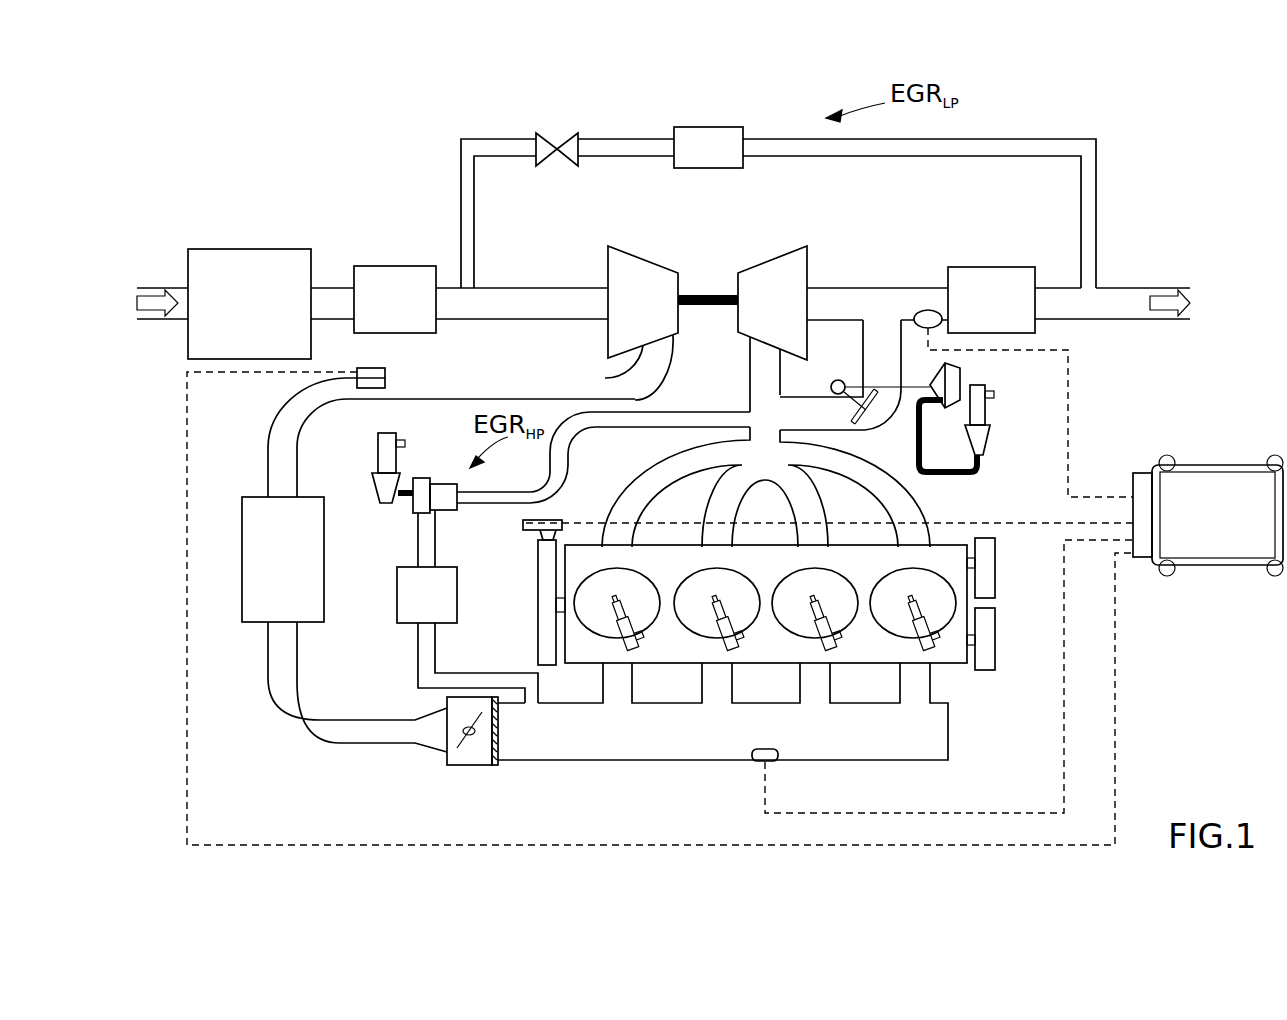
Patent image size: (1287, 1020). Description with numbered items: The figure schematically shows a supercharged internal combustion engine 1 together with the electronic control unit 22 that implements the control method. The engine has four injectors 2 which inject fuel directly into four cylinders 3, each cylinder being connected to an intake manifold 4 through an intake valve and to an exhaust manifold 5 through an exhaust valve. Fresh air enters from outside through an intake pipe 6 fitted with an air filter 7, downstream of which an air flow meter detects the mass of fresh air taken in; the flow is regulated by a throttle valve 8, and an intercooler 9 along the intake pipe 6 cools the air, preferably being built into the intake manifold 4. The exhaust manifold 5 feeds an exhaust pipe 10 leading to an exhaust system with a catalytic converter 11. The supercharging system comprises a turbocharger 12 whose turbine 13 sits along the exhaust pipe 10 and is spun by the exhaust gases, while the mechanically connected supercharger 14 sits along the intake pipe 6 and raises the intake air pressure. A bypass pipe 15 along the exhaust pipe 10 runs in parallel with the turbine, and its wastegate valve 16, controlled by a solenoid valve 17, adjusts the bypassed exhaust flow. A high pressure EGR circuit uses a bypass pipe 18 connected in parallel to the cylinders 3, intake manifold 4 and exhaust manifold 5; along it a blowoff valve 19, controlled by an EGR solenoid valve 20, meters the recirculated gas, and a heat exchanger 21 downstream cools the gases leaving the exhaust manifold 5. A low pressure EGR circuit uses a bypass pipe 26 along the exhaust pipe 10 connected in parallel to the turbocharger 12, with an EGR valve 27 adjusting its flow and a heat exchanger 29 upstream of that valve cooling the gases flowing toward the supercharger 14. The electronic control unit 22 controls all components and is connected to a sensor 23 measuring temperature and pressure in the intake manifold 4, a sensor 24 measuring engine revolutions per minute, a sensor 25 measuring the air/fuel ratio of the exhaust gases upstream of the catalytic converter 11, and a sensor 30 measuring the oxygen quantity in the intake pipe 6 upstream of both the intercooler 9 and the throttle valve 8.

The internal combustion engine 1 is at (305, 197).
The injectors 2 is at (932, 660).
The cylinders 3 is at (765, 603).
The intake manifold 4 is at (746, 649).
The exhaust manifold 5 is at (766, 442).
The intake pipe 6 is at (268, 448).
The air filter 7 is at (249, 304).
The throttle valve 8 is at (465, 765).
The intercooler 9 is at (283, 559).
The exhaust pipe 10 is at (905, 286).
The catalytic converter 11 is at (991, 300).
The turbocharger 12 is at (719, 264).
The turbine 13 is at (770, 265).
The supercharger 14 is at (635, 250).
The bypass pipe 15 is at (868, 363).
The wastegate valve 16 is at (868, 400).
The solenoid valve 17 is at (987, 428).
The bypass pipe 18 is at (434, 652).
The blowoff valve 19 is at (440, 511).
The EGR solenoid valve 20 is at (378, 455).
The heat exchanger 21 is at (427, 566).
The electronic control unit 22 is at (904, 515).
The sensor 23 is at (760, 768).
The sensor 24 is at (545, 516).
The sensor 25 is at (930, 310).
The bypass pipe 26 is at (1096, 208).
The EGR valve 27 is at (570, 122).
The heat exchanger 29 is at (708, 147).
The sensor 30 is at (385, 375).